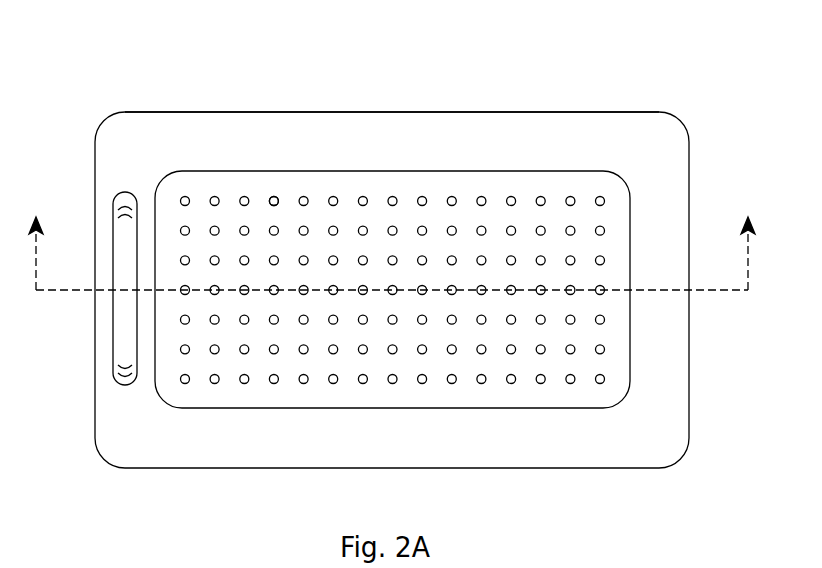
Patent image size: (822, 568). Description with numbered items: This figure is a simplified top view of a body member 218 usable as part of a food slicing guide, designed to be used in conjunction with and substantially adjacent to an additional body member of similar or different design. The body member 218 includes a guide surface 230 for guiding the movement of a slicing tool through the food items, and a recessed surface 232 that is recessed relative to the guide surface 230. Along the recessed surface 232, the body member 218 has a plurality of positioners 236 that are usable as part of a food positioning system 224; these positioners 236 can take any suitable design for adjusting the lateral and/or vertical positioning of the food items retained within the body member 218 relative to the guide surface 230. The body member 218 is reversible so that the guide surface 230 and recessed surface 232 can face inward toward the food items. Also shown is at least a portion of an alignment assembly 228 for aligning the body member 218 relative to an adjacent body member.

The body member 218 is at (666, 87).
The food positioning system 224 is at (483, 195).
The alignment assembly 228 is at (123, 193).
The guide surface 230 is at (218, 132).
The recessed surface 232 is at (365, 182).
The positioners 236 is at (273, 196).